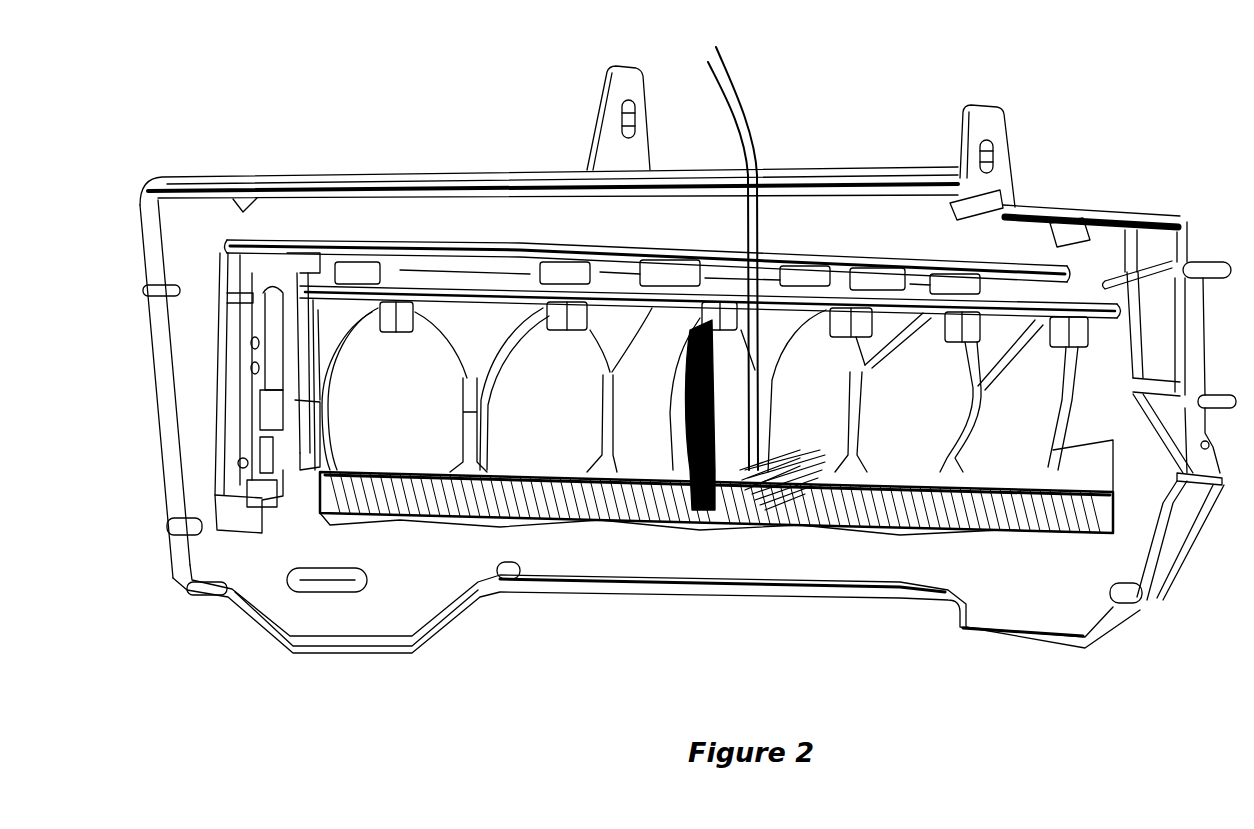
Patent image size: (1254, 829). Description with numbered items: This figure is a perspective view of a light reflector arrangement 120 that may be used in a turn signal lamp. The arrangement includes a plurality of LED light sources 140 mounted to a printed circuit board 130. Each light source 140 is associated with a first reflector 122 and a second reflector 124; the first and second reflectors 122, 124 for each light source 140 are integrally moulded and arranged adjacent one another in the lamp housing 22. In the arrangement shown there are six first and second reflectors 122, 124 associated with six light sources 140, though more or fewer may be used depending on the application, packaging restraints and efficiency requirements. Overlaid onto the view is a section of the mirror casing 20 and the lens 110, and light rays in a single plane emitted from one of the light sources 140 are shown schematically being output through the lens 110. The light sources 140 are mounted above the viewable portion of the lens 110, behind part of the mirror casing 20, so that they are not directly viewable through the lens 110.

The mirror casing 20 is at (742, 93).
The lamp housing 22 is at (240, 368).
The lens 110 is at (735, 450).
The light reflector arrangement 120 is at (236, 164).
The first reflector 122 is at (425, 415).
The second reflector 124 is at (415, 505).
The printed circuit board 130 is at (465, 290).
The LED light source 140 is at (380, 250).